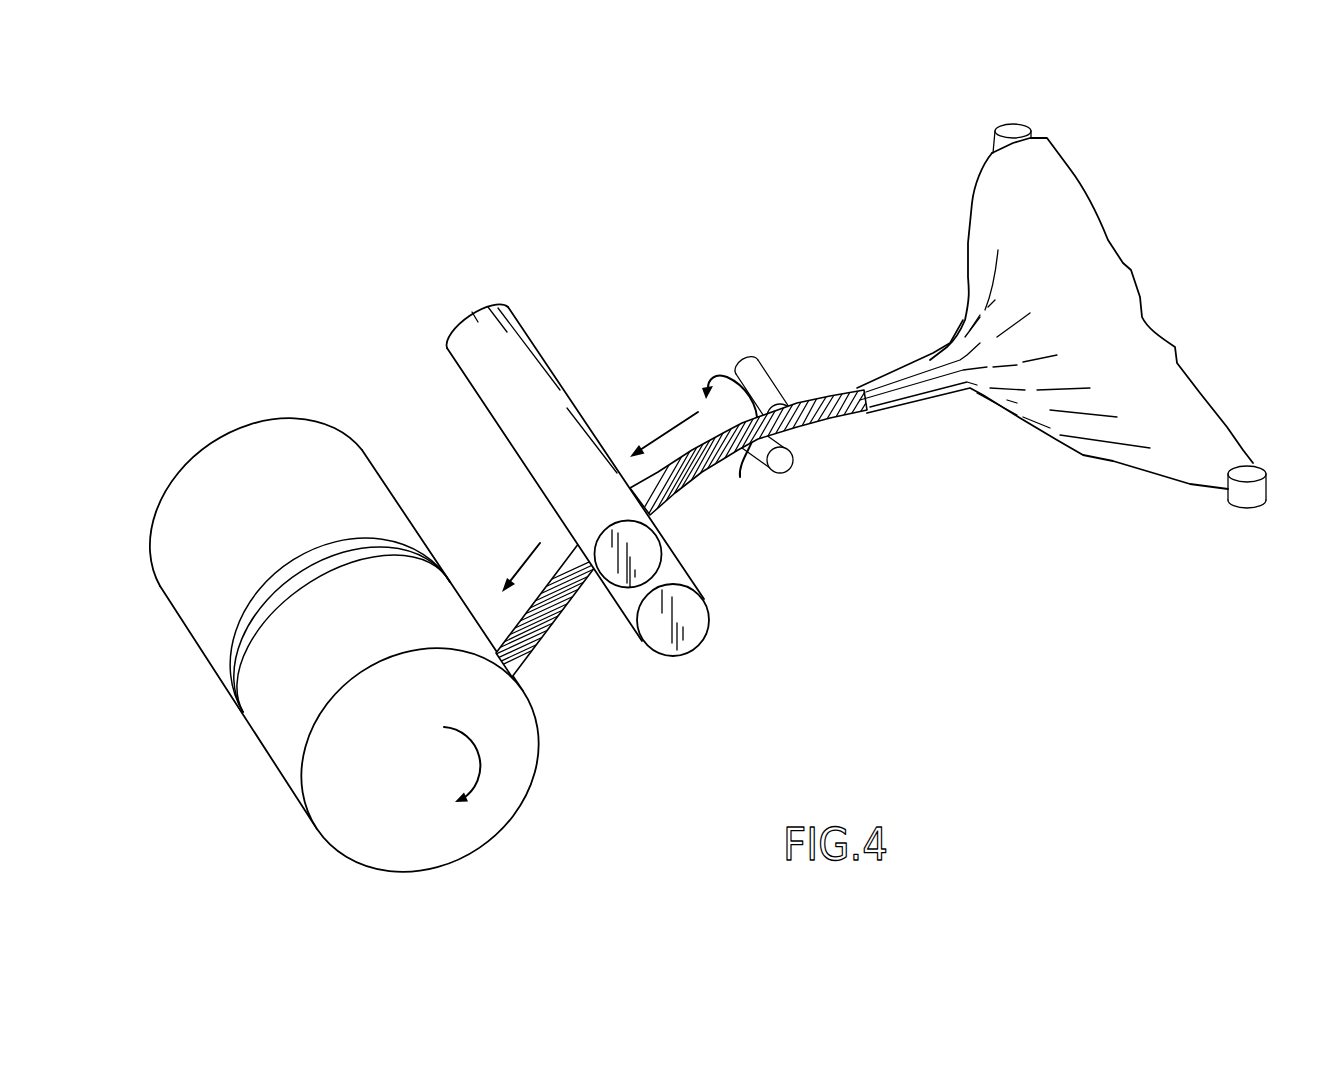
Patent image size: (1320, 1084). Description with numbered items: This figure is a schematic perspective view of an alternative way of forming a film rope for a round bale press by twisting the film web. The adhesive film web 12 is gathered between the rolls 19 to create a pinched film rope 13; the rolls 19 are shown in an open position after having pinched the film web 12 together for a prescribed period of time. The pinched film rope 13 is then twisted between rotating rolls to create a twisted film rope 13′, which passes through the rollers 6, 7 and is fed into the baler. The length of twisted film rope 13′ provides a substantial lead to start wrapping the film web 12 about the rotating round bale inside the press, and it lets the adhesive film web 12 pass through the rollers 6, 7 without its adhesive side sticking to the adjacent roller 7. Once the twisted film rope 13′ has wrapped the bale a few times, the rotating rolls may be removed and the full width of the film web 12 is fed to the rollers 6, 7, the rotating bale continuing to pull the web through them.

The roller 6 is at (650, 547).
The roller 7 is at (693, 618).
The film web 12 is at (1117, 288).
The pinched film rope 13 is at (879, 382).
The twisted film rope 13′ is at (543, 632).
The rolls 19 is at (1022, 124).